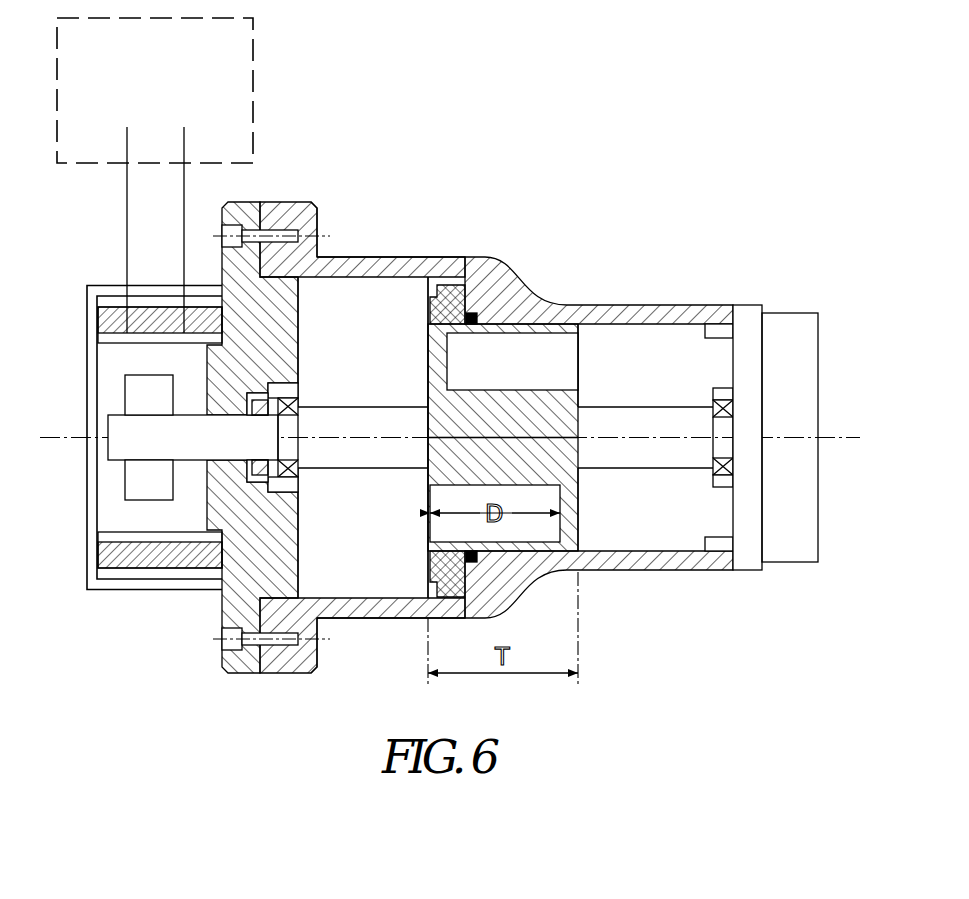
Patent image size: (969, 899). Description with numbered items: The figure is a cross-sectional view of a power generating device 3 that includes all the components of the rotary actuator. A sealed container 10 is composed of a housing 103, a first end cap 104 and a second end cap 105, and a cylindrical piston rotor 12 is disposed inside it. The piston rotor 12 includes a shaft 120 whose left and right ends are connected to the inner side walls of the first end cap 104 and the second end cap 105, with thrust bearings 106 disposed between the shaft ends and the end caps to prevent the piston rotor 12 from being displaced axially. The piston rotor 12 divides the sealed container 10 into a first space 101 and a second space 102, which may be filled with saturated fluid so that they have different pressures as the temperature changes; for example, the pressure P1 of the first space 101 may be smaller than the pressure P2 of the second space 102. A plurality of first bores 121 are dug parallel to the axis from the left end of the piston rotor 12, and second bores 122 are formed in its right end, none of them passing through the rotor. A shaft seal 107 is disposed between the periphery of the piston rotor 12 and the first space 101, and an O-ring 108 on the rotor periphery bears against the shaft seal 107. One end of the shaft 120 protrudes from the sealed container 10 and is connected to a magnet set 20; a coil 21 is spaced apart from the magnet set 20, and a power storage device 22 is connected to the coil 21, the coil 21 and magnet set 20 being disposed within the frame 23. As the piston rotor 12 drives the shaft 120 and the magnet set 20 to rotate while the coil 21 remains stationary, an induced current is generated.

The power generating device 3 is at (797, 148).
The sealed container 10 is at (437, 431).
The piston rotor 12 is at (525, 462).
The magnet set 20 is at (125, 383).
The coil 21 is at (107, 320).
The power storage device 22 is at (168, 104).
The frame 23 is at (98, 508).
The first space 101 is at (380, 357).
The second space 102 is at (671, 531).
The housing 103 is at (343, 267).
The first end cap 104 is at (250, 583).
The second end cap 105 is at (750, 318).
The thrust bearing 106 is at (733, 467).
The shaft seal 107 is at (443, 287).
The O-ring 108 is at (472, 317).
The shaft 120 is at (115, 450).
The first bore 121 is at (442, 533).
The second bore 122 is at (548, 361).
The pressure of the first space P1 is at (291, 443).
The pressure of the second space P2 is at (713, 419).